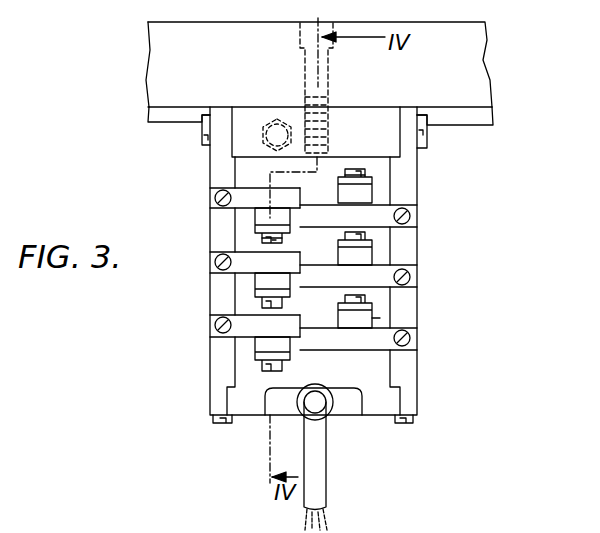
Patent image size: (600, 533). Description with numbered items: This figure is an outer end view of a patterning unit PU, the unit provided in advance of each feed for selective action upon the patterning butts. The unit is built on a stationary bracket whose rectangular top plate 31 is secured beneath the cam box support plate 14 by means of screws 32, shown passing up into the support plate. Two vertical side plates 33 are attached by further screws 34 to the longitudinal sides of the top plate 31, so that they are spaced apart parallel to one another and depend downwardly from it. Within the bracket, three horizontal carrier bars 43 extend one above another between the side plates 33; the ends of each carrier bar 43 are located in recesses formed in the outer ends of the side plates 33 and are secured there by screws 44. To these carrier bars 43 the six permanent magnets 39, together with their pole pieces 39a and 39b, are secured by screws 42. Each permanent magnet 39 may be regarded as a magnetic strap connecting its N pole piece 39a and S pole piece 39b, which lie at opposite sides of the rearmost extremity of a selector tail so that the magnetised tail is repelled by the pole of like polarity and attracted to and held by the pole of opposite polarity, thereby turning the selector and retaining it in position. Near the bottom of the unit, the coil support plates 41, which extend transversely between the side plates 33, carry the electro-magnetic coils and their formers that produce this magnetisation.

The cam box support plate 14 is at (166, 61).
The rectangular top plate 31 is at (379, 117).
The screws 32 is at (308, 72).
The vertical side plates 33 is at (410, 175).
The screws 34 is at (203, 142).
The permanent magnet 39 is at (258, 223).
The N pole piece 39a is at (364, 176).
The S pole piece 39b is at (428, 378).
The coil support plates 41 is at (378, 405).
The screws 42 is at (352, 169).
The horizontal carrier bars 43 is at (258, 188).
The screws 44 is at (216, 199).
The patterning unit PU is at (420, 293).